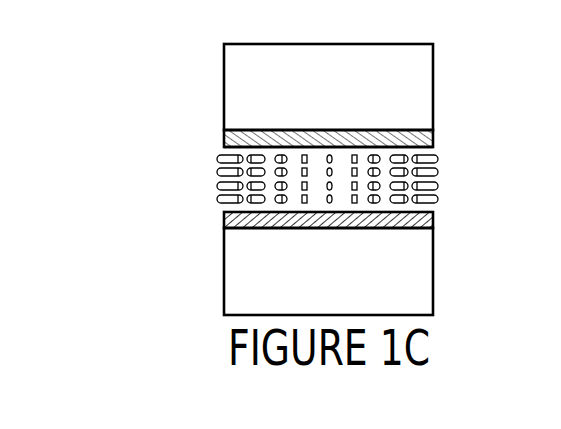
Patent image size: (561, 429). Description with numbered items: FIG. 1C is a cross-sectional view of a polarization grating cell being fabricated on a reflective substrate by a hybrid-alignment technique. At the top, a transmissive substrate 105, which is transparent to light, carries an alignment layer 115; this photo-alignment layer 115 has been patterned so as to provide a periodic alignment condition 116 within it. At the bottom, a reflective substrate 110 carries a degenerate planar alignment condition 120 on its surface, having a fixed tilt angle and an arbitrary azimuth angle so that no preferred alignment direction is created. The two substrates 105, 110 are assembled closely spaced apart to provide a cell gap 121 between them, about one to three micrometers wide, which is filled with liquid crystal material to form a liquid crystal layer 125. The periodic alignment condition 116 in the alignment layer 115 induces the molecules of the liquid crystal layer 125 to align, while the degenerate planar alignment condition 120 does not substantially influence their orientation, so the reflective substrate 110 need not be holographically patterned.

The transmissive substrate 105 is at (312, 121).
The reflective substrate 110 is at (312, 307).
The alignment layer 115 is at (437, 137).
The periodic alignment condition 116 is at (222, 138).
The degenerate planar alignment condition 120 is at (433, 218).
The cell gap 121 is at (212, 150).
The liquid crystal layer 125 is at (438, 178).